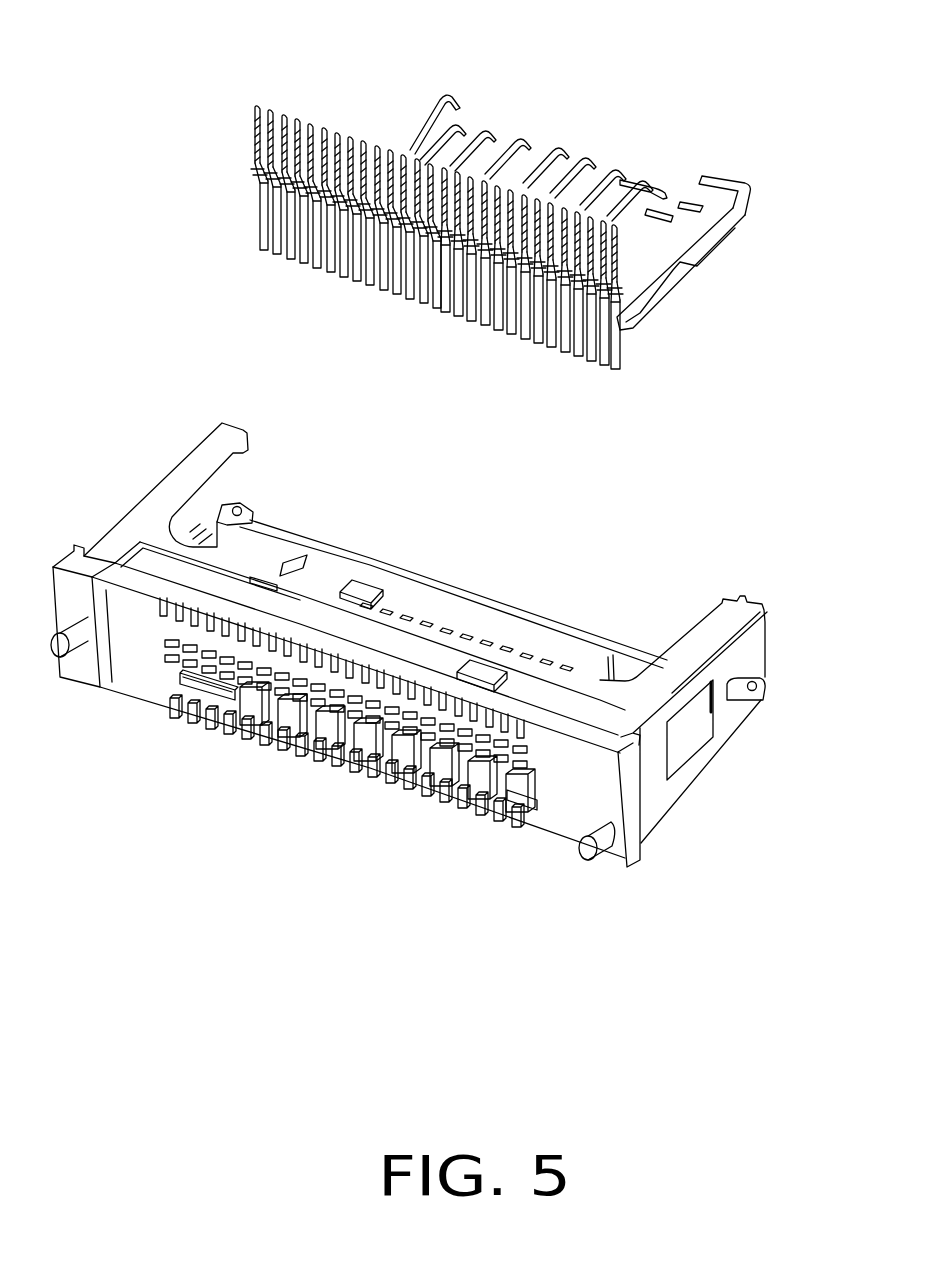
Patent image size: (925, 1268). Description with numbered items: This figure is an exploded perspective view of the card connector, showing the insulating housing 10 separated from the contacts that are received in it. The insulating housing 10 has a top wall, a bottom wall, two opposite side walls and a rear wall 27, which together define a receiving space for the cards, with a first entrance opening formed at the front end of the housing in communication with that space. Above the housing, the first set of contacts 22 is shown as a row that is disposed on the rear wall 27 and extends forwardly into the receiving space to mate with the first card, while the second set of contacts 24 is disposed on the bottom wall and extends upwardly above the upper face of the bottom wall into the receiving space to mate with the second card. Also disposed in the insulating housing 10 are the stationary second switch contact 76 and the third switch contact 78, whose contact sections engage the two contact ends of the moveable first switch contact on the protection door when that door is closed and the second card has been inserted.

The insulating housing 10 is at (421, 645).
The first set of contacts 22 is at (282, 113).
The second set of contacts 24 is at (488, 127).
The rear wall 27 is at (130, 650).
The second switch contact 76 is at (690, 203).
The third switch contact 78 is at (720, 184).